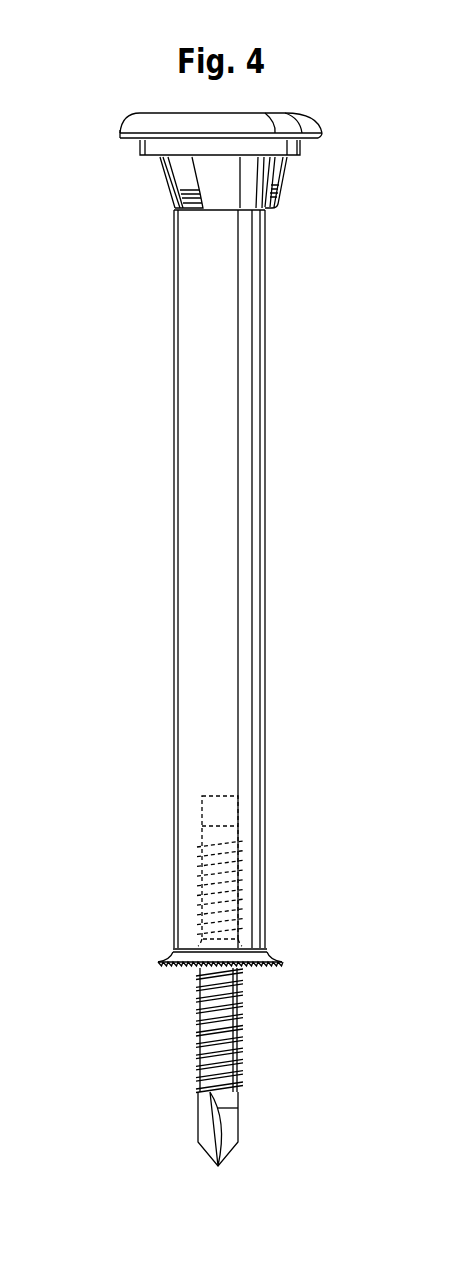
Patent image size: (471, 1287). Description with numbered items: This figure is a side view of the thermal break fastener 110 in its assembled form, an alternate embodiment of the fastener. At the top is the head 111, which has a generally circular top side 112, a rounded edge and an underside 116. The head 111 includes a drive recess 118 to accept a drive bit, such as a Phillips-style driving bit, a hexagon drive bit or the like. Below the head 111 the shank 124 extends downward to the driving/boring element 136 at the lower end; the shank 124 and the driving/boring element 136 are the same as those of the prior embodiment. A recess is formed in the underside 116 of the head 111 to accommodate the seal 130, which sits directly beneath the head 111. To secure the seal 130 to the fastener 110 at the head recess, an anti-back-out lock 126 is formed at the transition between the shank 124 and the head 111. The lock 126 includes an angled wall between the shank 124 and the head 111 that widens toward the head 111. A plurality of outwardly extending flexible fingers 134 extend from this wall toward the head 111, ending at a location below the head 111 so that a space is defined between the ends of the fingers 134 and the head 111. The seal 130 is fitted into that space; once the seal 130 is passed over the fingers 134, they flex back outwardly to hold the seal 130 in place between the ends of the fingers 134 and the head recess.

The fastener 110 is at (139, 72).
The head 111 is at (132, 124).
The drive recess 118 is at (220, 112).
The top side 112 is at (288, 113).
The underside 116 is at (315, 138).
The seal 130 is at (137, 154).
The flexible fingers 134 is at (182, 184).
The anti-back-out lock 126 is at (273, 207).
The shank 124 is at (175, 662).
The driving/boring element 136 is at (250, 1046).